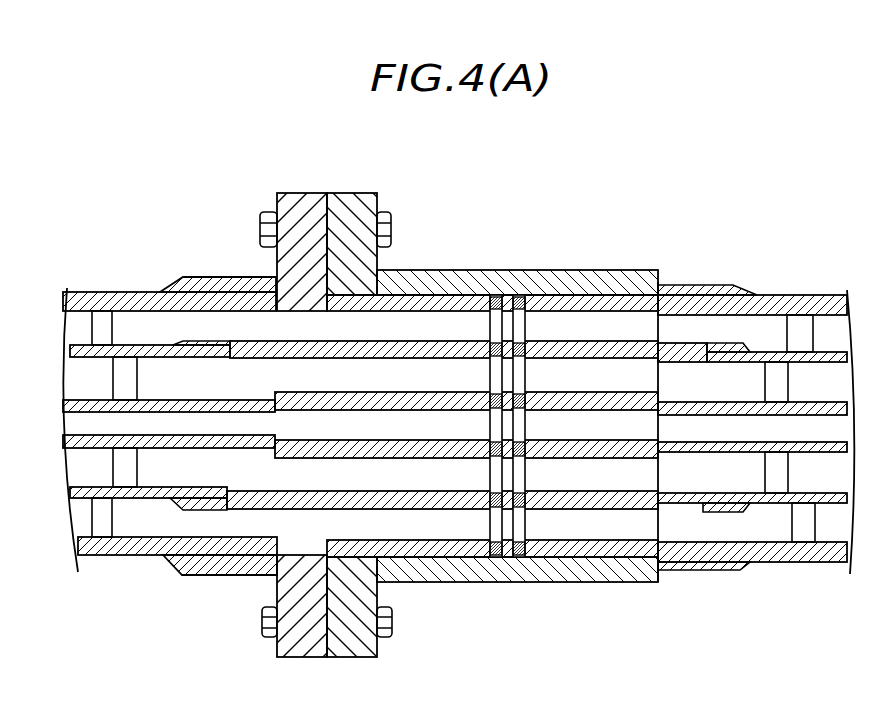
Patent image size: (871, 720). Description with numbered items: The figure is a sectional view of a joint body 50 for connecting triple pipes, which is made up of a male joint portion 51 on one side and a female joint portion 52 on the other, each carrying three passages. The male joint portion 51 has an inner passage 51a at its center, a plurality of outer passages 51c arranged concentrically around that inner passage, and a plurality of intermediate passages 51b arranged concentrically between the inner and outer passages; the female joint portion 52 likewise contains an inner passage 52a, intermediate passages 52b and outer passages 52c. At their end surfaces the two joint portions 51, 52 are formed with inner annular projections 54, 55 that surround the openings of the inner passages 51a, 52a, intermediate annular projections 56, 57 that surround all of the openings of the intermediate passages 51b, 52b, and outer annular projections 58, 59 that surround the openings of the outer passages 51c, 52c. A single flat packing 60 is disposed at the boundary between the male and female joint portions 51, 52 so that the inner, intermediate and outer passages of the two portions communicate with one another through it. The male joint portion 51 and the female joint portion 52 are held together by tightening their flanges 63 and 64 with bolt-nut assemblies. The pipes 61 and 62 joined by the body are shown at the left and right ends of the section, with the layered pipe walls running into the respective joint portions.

The joint body 50 is at (470, 268).
The male joint portion 51 is at (250, 277).
The inner passage 51a is at (425, 426).
The intermediate passages 51b is at (425, 377).
The outer passages 51c is at (425, 327).
The female joint portion 52 is at (618, 268).
The inner passage 52a is at (597, 426).
The intermediate passages 52b is at (597, 377).
The outer passages 52c is at (597, 327).
The inner annular projection 54 is at (490, 404).
The inner annular projection 55 is at (525, 404).
The intermediate annular projection 56 is at (490, 356).
The intermediate annular projection 57 is at (525, 356).
The outer annular projection 58 is at (490, 306).
The outer annular projection 59 is at (525, 306).
The flat packing 60 is at (507, 295).
The left multi-layer pipe 61 is at (90, 290).
The right multi-layer pipe 62 is at (817, 292).
The flange 63 is at (305, 650).
The flange 64 is at (357, 650).